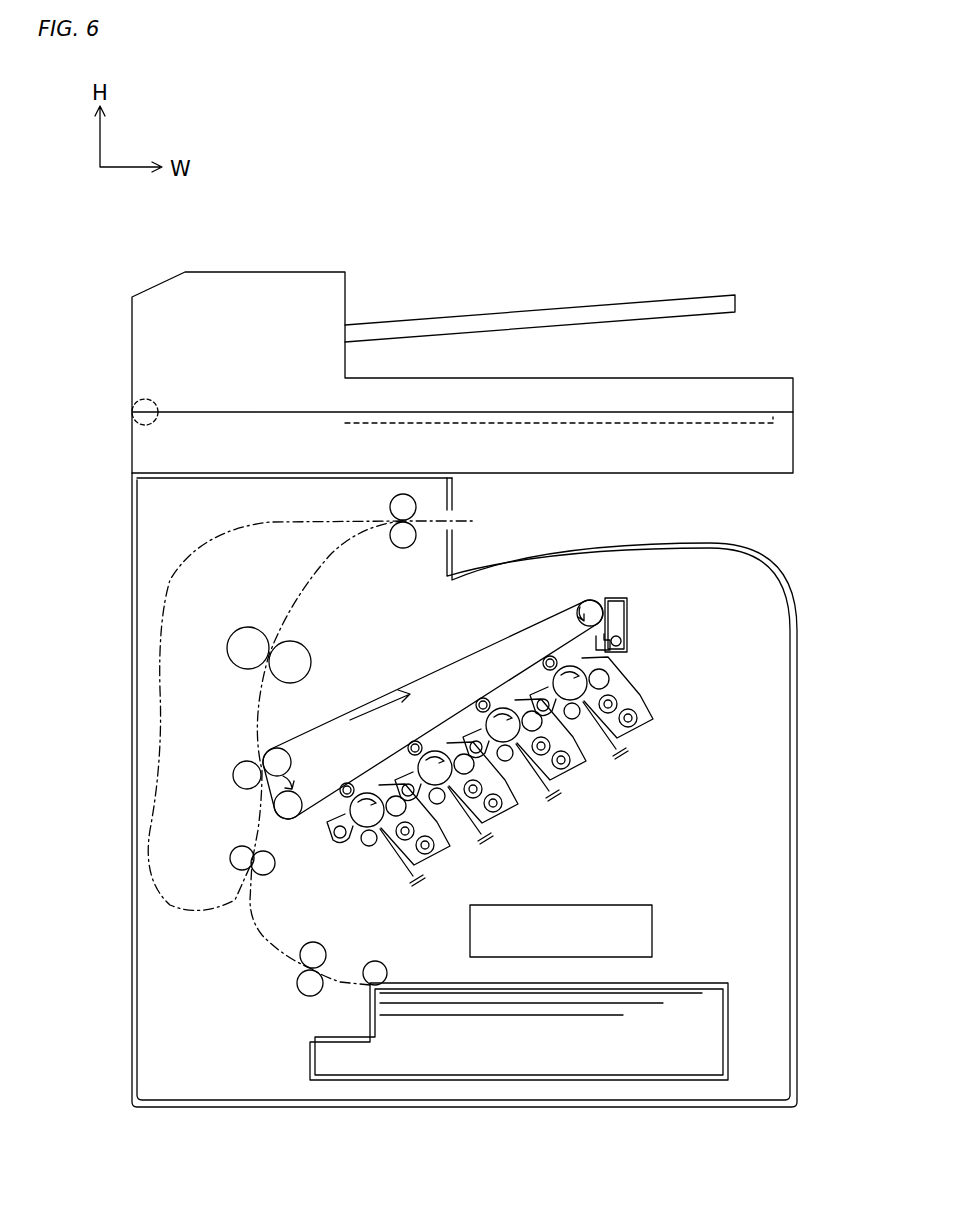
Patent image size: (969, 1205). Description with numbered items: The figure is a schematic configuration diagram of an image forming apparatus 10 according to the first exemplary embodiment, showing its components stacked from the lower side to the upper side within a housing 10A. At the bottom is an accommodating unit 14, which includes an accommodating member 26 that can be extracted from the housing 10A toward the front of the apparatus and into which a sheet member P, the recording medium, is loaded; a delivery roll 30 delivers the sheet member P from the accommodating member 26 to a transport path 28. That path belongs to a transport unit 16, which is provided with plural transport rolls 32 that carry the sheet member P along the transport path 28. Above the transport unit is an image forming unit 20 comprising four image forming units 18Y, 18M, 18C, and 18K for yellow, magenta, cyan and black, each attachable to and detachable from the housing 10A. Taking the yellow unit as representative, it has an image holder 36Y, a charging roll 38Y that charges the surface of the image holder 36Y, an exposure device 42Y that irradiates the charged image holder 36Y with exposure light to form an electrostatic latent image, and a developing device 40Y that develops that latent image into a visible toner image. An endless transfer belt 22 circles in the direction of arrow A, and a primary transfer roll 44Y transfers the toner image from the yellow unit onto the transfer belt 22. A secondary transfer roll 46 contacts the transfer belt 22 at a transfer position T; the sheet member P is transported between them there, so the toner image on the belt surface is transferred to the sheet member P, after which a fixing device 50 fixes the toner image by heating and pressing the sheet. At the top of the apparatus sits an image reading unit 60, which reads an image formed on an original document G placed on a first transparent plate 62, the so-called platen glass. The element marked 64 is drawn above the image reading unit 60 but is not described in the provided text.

The image forming apparatus 10 is at (138, 238).
The housing 10A is at (135, 570).
The accommodating unit 14 is at (772, 1045).
The transport unit 16 is at (189, 981).
The image forming unit of black 18K is at (456, 870).
The image forming unit of cyan 18C is at (524, 840).
The image forming unit of magenta 18M is at (594, 799).
The image forming unit of yellow 18Y is at (670, 711).
The image forming unit 20 is at (695, 655).
The transfer belt 22 is at (585, 600).
The accommodating member 26 is at (728, 1057).
The transport path 28 is at (267, 950).
The delivery roll 30 is at (367, 962).
The transport rolls 32 is at (403, 548).
The image holder 36Y is at (545, 695).
The charging roll 38Y is at (578, 722).
The developing device 40Y is at (650, 693).
The exposure device 42Y is at (620, 752).
The primary transfer roll 44Y is at (548, 660).
The secondary transfer roll 46 is at (248, 790).
The fixing device 50 is at (262, 615).
The image reading unit 60 is at (789, 233).
The first transparent plate 62 is at (713, 423).
The document cover 64 is at (283, 262).
The original document G is at (675, 412).
The sheet member P is at (672, 985).
The transfer position T is at (262, 768).
The direction of arrow A is at (378, 717).